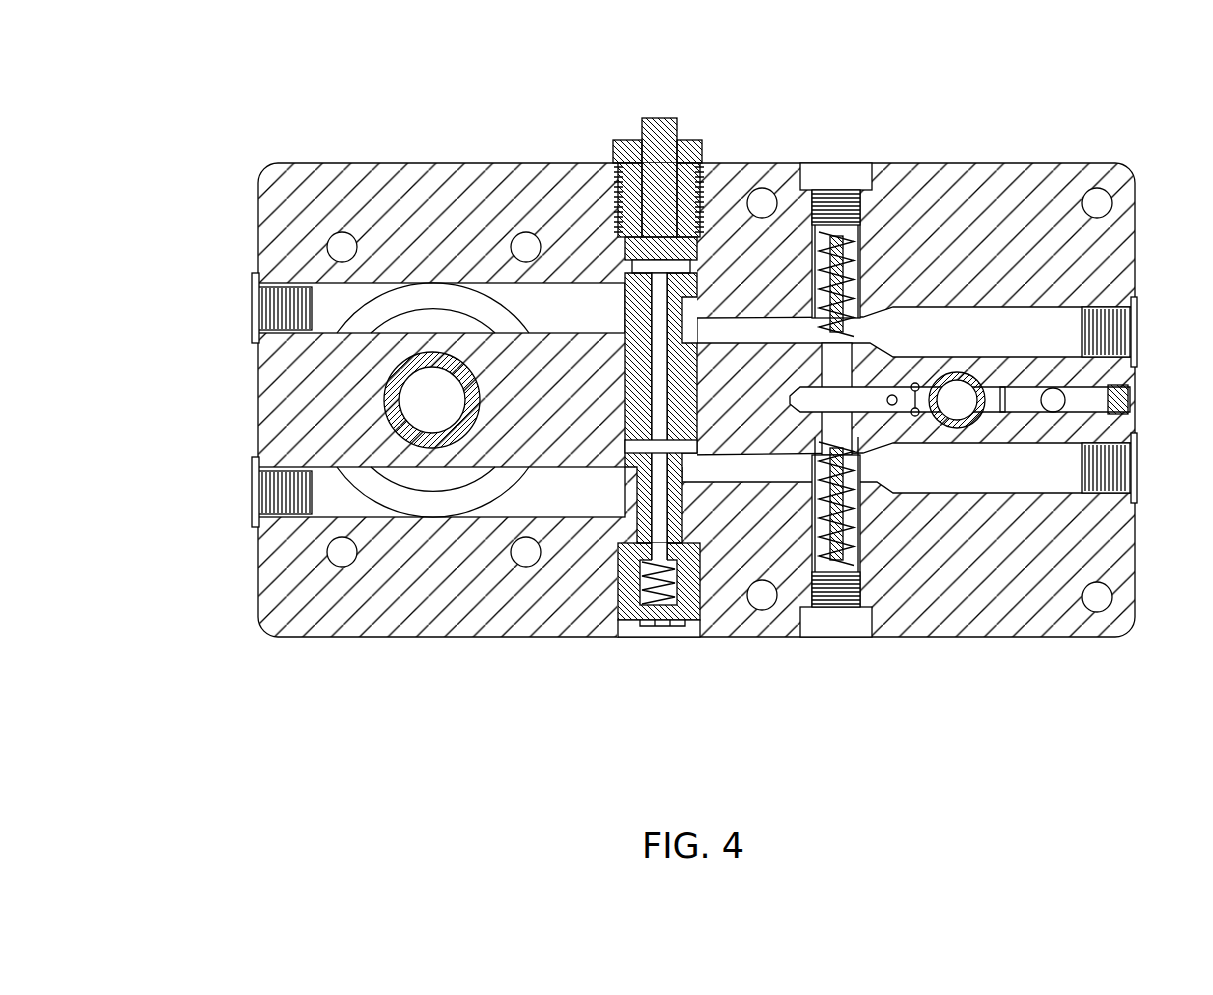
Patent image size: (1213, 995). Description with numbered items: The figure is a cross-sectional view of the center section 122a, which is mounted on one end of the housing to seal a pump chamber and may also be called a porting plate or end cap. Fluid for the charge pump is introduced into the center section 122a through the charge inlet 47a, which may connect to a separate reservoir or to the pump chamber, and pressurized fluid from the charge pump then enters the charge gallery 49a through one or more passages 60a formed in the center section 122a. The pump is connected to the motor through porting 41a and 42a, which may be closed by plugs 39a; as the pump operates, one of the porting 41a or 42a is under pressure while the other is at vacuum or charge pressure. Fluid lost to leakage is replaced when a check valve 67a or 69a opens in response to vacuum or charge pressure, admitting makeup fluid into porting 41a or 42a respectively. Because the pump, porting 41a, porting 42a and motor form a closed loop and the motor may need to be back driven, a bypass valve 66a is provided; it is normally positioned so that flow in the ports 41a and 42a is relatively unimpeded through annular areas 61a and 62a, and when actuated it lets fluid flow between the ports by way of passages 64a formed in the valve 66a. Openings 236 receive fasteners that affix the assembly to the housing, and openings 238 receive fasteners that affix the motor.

The center section 122a is at (216, 101).
The openings 236 is at (1110, 218).
The openings 238 is at (338, 234).
The plugs 39a is at (252, 305).
The porting 42a is at (590, 323).
The porting 41a is at (590, 507).
The annular area 62a is at (608, 300).
The bypass valve 66a is at (631, 138).
The annular area 61a is at (688, 507).
The passages 64a is at (660, 445).
The check valve 69a is at (838, 166).
The check valve 67a is at (835, 622).
The passages 60a is at (913, 383).
The charge inlet 47a is at (1084, 400).
The charge gallery 49a is at (863, 400).